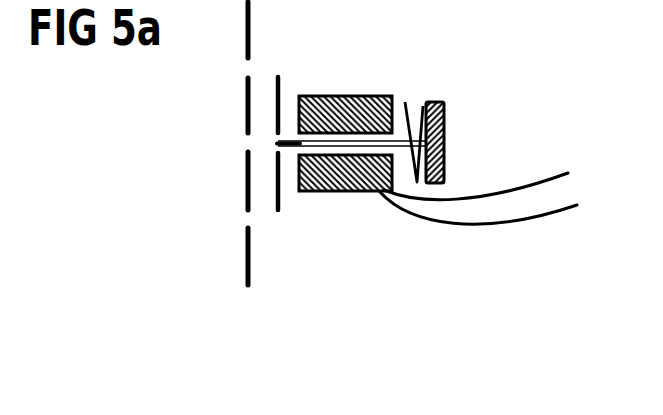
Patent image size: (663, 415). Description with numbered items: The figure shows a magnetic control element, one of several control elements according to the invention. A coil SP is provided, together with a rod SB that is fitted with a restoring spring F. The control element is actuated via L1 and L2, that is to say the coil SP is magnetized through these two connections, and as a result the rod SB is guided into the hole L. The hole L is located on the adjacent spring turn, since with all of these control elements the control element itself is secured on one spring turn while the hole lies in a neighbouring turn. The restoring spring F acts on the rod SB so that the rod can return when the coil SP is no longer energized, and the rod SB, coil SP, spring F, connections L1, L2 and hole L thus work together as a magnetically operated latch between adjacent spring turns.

The hole L is at (248, 142).
The rod SB is at (282, 142).
The coil SP is at (333, 191).
The restoring spring F is at (404, 102).
The actuation line L1 is at (523, 188).
The actuation line L2 is at (515, 227).